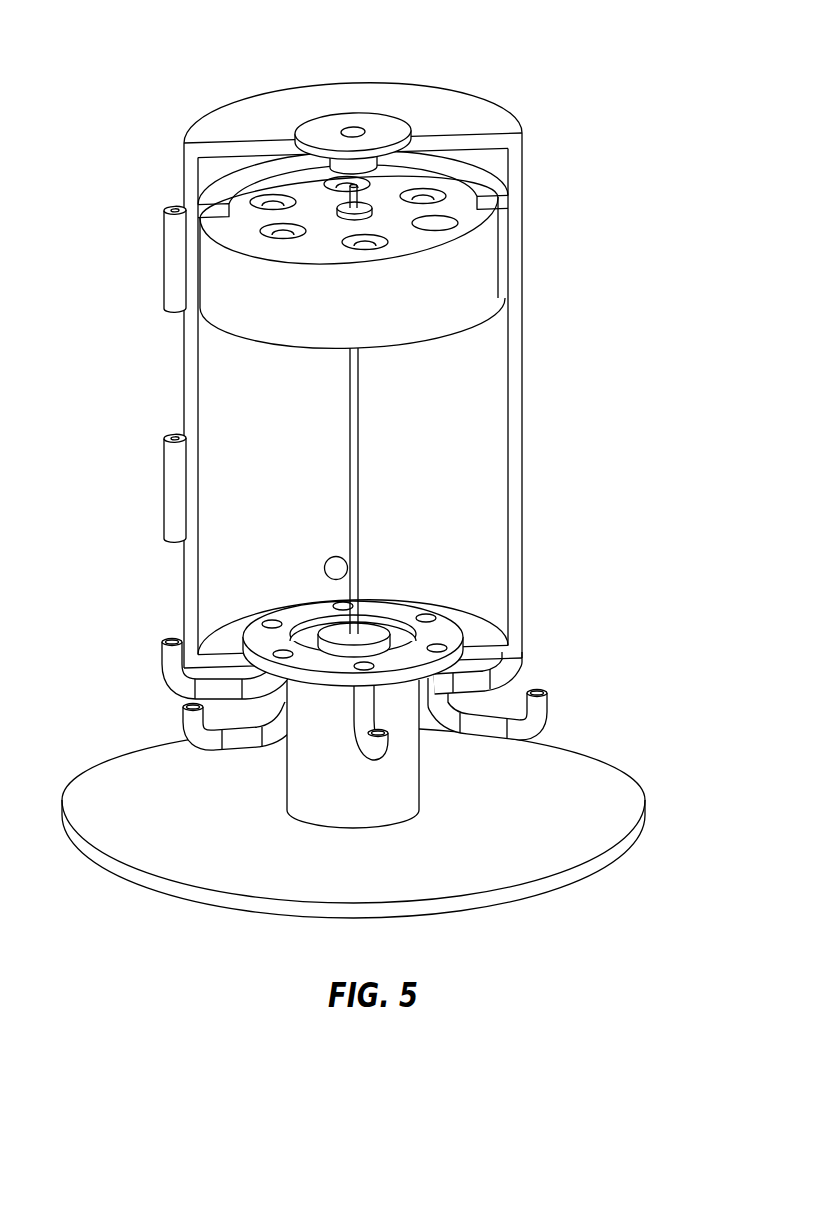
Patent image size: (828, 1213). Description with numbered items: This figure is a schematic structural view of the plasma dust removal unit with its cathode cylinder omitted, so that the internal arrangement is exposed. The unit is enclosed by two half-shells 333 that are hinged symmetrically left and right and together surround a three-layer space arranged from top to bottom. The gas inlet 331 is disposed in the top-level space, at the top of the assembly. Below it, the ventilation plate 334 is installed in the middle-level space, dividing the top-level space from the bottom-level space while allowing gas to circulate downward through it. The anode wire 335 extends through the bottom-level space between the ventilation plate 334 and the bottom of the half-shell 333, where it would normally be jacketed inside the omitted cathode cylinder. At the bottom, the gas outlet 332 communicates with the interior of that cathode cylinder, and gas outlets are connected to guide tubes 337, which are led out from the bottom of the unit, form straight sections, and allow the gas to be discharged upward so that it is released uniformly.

The gas inlet 331 is at (392, 130).
The gas outlet 332 is at (440, 615).
The half-shell 333 is at (513, 360).
The ventilation plate 334 is at (441, 275).
The anode wire 335 is at (358, 520).
The guide tube 337 is at (548, 697).